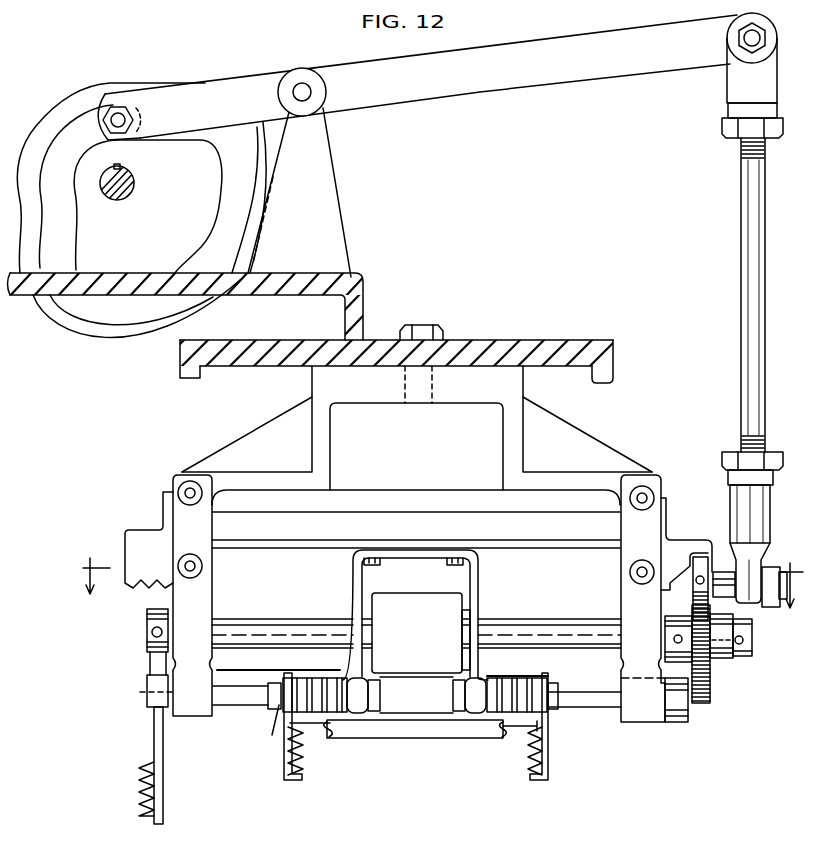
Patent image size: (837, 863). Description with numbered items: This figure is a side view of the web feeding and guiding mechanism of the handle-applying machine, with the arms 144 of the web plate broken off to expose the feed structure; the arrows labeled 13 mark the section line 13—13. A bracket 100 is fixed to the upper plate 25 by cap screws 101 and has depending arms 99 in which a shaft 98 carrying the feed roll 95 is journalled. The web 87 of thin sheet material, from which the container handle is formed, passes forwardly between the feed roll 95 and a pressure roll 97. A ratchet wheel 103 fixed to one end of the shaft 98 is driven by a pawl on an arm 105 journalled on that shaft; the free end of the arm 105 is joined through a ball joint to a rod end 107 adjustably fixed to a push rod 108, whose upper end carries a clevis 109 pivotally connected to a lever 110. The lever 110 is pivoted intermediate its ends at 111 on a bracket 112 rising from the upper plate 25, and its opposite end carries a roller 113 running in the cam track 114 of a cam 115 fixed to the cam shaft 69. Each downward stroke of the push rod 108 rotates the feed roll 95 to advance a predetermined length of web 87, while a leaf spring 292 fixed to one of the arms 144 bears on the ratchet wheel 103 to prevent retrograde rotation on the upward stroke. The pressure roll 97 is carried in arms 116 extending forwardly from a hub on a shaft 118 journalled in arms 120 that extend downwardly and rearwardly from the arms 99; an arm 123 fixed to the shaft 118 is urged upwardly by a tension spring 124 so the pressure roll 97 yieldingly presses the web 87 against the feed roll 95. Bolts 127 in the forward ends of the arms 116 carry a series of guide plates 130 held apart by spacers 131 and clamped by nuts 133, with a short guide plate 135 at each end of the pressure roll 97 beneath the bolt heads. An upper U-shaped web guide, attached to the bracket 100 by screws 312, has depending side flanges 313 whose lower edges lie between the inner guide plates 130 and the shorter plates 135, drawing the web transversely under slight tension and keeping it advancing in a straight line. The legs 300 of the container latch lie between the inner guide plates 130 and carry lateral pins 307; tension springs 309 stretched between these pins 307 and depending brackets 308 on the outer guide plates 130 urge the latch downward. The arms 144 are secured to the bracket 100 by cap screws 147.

The section line 13- 13 is at (441, 596).
The upper plate 25 is at (517, 350).
The cam shaft 69 is at (127, 181).
The web 87 is at (536, 677).
The feed roll 95 is at (426, 644).
The pressure roll 97 is at (428, 712).
The shaft 98 is at (531, 625).
The depending arms 99 is at (200, 627).
The bracket 100 is at (342, 497).
The cap screws 101 is at (418, 338).
The ratchet wheel 103 is at (710, 688).
The arm 105 is at (726, 565).
The rod end 107 is at (758, 530).
The push rod 108 is at (755, 325).
The clevis 109 is at (767, 81).
The lever 110 is at (433, 89).
The pivot 111 is at (299, 68).
The bracket 112 is at (308, 217).
The roller 113 is at (102, 122).
The cam track 114 is at (47, 150).
The cam 115 is at (171, 211).
The arms 116 is at (346, 686).
The shaft 118 is at (237, 697).
The arms 120 is at (188, 714).
The arm 123 is at (155, 746).
The tension spring 124 is at (140, 788).
The bolts 127 is at (453, 689).
The guide plates 130 is at (303, 676).
The spacers 131 is at (500, 678).
The nuts 133 is at (563, 722).
The short guide plate 135 is at (374, 688).
The arms 144 is at (163, 564).
The cap screws 147 is at (183, 483).
The leaf spring 292 is at (692, 588).
The legs 300 is at (495, 727).
The pins 307 is at (519, 735).
The depending brackets 308 is at (547, 762).
The tension spring 309 is at (548, 742).
The screws 312 is at (448, 562).
The depending side flanges 313 is at (355, 597).